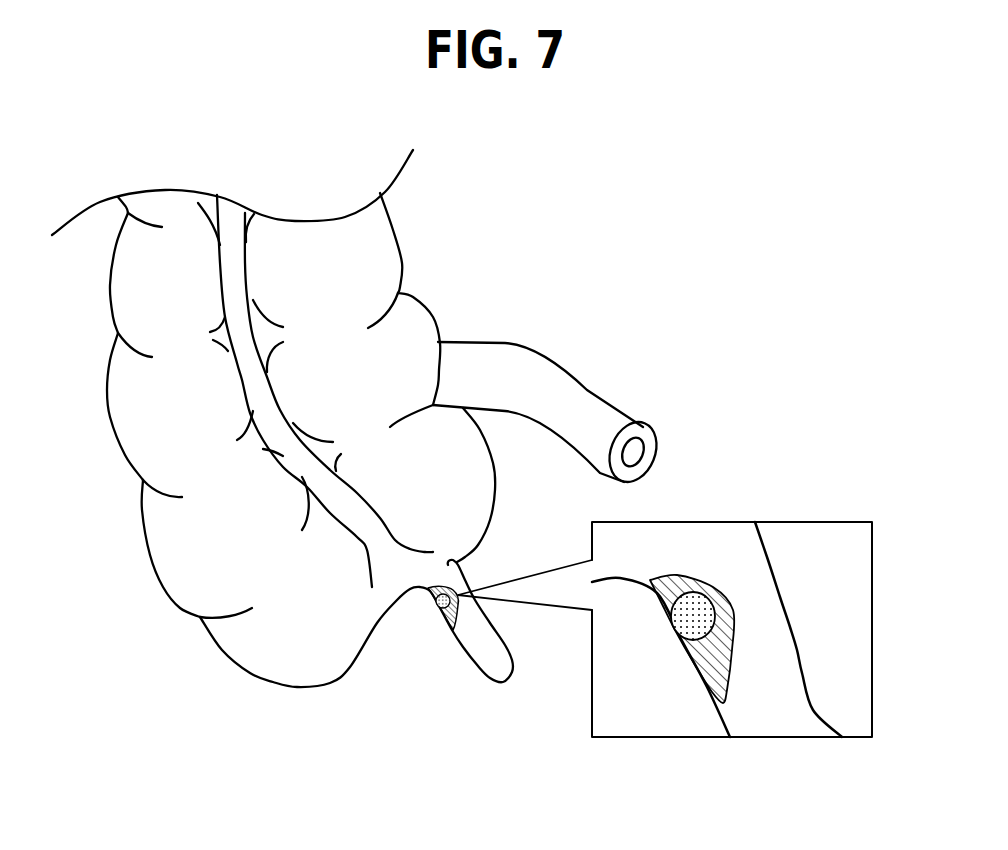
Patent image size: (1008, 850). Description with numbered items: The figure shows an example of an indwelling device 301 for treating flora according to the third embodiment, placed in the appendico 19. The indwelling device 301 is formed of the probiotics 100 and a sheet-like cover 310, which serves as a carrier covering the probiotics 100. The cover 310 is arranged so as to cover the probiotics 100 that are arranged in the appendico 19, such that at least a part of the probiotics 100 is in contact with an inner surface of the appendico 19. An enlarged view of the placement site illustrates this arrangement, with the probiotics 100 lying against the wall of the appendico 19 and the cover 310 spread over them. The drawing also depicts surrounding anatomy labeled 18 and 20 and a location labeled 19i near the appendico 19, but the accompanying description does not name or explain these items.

The stomach 18 is at (293, 653).
The appendico 19 is at (498, 670).
The duodenal papilla 19i is at (437, 570).
The bile duct / pancreatic duct 20 is at (558, 392).
The indwelling device 301 is at (443, 630).
The probiotics 100 is at (693, 610).
The sheet-like cover 310 is at (727, 638).